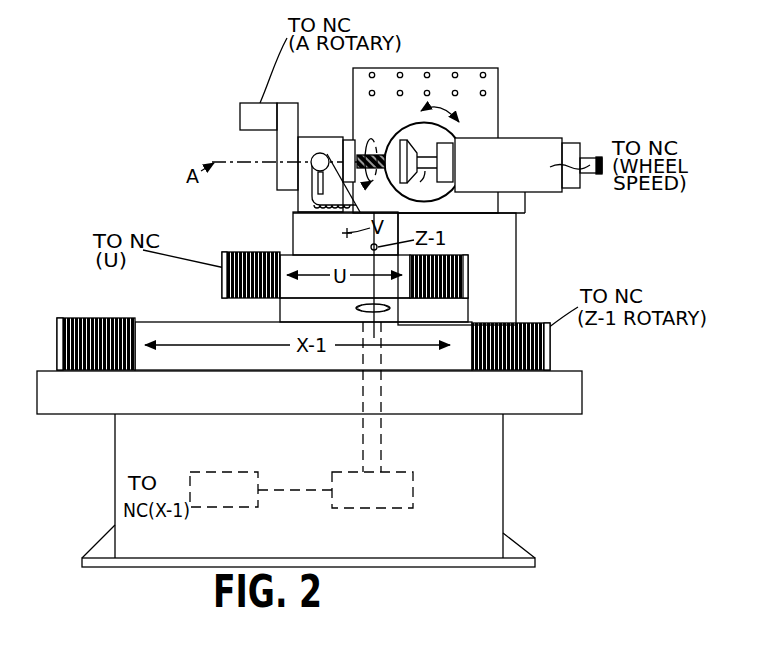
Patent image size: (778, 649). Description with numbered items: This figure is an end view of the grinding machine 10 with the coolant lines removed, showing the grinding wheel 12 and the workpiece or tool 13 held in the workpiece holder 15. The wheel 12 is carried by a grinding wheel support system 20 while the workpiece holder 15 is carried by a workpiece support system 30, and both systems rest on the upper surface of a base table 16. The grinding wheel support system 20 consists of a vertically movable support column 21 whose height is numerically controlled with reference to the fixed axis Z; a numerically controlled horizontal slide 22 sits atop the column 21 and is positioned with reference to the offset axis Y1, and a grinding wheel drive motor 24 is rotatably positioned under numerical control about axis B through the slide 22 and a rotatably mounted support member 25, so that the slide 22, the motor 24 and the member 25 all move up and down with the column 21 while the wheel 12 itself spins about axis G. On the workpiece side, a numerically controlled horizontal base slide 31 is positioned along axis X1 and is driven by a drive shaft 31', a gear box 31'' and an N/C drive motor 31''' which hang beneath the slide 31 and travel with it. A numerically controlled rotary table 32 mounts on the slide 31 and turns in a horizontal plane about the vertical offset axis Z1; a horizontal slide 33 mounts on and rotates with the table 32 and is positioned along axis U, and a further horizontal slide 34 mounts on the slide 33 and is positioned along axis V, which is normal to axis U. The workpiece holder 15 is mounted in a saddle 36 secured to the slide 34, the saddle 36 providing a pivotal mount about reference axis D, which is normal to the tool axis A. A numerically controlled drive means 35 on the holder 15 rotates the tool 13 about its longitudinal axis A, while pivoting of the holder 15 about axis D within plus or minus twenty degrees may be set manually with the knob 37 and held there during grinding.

The machine 10 is at (168, 150).
The grinding wheel 12 is at (417, 137).
The workpiece or tool 13 is at (378, 147).
The workpiece holder 15 is at (350, 141).
The base table 16 is at (112, 478).
The grinding wheel support system 20 is at (470, 131).
The support column 21 is at (517, 256).
The horizontal slide 22 is at (503, 204).
The grinding wheel drive motor 24 is at (535, 137).
The rotatably mounted support member 25 is at (400, 127).
The workpiece support system 30 is at (270, 186).
The horizontal base slide 31 is at (303, 327).
The drive shaft 31' is at (398, 397).
The gear box 31'' is at (385, 508).
The N/C drive motor 31''' is at (261, 505).
The rotary table 32 is at (470, 300).
The horizontal slide 33 is at (281, 300).
The horizontal slide 34 is at (293, 228).
The N/C drive means 35 is at (240, 114).
The saddle 36 is at (352, 200).
The manual knob 37 is at (311, 157).